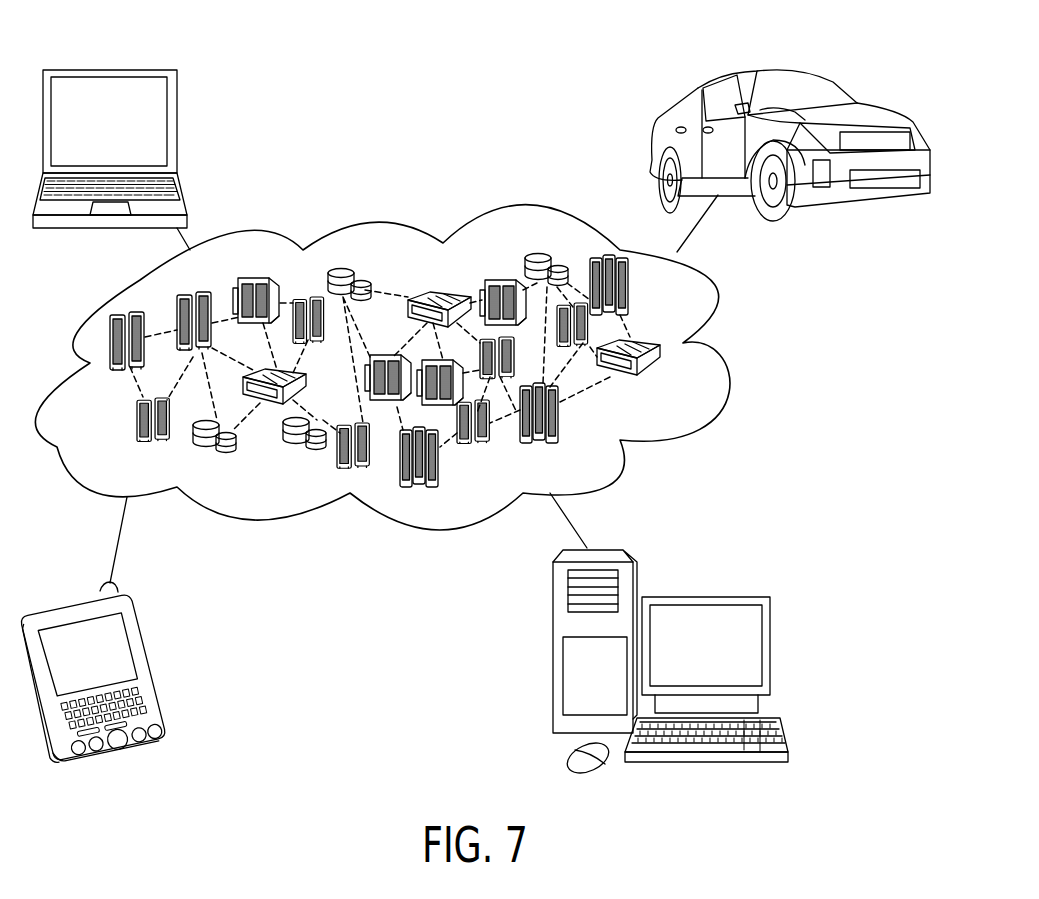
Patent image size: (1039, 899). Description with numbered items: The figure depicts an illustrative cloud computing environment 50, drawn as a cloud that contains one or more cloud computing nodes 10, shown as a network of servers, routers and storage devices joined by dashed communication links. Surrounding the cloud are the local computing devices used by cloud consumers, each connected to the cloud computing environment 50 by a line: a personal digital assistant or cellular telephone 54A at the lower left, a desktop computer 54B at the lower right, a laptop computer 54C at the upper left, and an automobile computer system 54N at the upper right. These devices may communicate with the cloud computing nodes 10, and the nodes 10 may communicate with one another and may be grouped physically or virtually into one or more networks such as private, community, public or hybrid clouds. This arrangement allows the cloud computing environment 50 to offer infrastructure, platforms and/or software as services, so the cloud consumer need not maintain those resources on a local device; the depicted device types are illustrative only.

The cloud computing nodes 10 is at (680, 398).
The cloud computing environment 50 is at (723, 297).
The personal digital assistant or cellular telephone 54A is at (143, 645).
The desktop computer 54B is at (770, 647).
The laptop computer 54C is at (175, 122).
The automobile computer system 54N is at (843, 93).